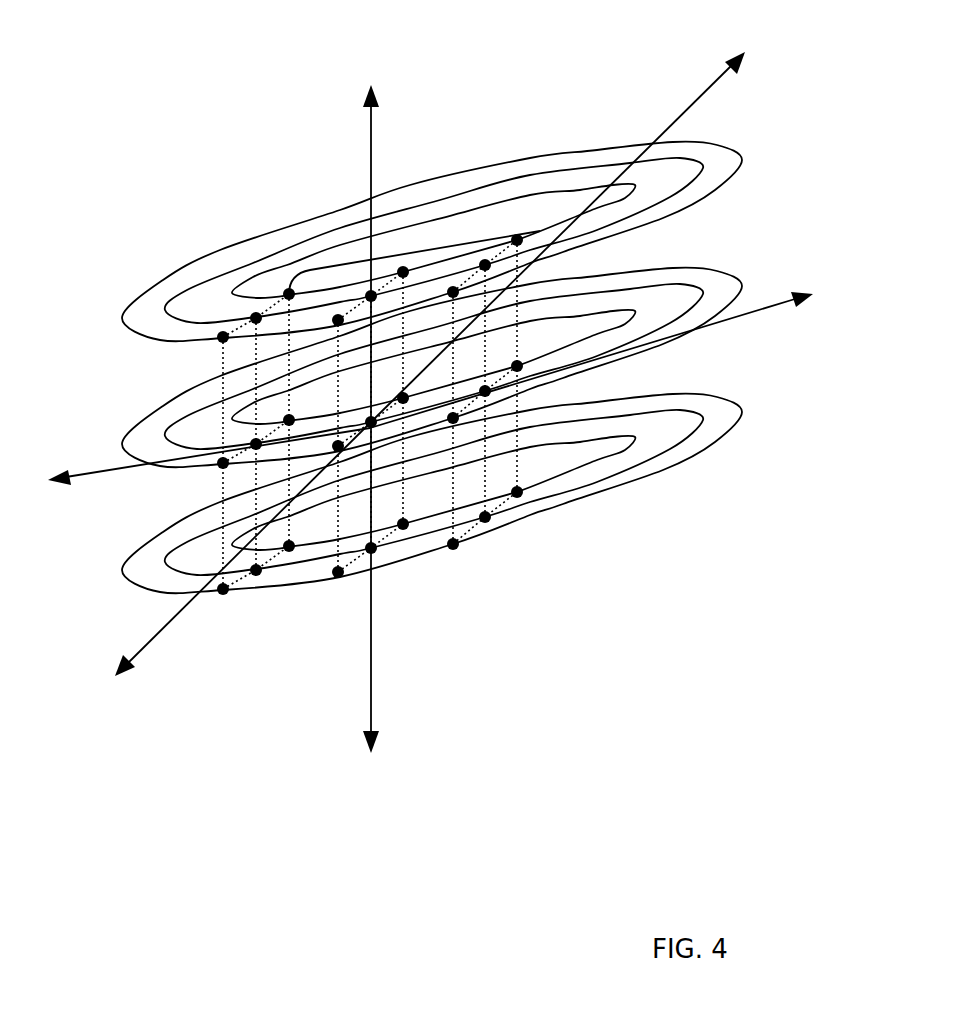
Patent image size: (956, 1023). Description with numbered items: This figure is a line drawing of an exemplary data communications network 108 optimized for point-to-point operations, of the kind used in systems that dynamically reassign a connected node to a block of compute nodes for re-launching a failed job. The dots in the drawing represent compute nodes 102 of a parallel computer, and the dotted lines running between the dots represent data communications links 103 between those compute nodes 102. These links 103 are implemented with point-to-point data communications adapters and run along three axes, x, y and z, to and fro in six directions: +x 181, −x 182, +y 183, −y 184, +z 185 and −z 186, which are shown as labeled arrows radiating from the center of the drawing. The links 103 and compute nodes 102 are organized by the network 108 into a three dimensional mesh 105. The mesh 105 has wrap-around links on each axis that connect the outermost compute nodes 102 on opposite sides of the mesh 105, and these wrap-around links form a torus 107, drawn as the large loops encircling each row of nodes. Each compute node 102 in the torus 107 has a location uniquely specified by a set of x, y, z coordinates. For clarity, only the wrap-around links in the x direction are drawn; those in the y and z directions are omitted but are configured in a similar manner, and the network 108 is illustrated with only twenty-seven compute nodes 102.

The compute nodes 102 is at (457, 550).
The data communications links 103 is at (224, 366).
The three dimensional mesh 105 is at (517, 238).
The torus 107 is at (200, 238).
The data communications network 108 is at (416, 561).
The +x direction 181 is at (850, 325).
The −x direction 182 is at (44, 518).
The +y direction 183 is at (790, 73).
The −y direction 184 is at (104, 723).
The +z direction 185 is at (386, 74).
The −z direction 186 is at (386, 813).